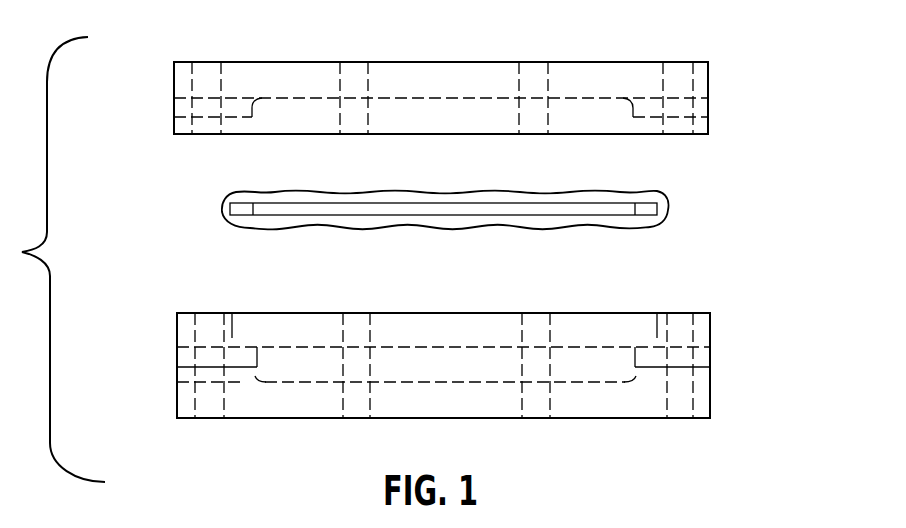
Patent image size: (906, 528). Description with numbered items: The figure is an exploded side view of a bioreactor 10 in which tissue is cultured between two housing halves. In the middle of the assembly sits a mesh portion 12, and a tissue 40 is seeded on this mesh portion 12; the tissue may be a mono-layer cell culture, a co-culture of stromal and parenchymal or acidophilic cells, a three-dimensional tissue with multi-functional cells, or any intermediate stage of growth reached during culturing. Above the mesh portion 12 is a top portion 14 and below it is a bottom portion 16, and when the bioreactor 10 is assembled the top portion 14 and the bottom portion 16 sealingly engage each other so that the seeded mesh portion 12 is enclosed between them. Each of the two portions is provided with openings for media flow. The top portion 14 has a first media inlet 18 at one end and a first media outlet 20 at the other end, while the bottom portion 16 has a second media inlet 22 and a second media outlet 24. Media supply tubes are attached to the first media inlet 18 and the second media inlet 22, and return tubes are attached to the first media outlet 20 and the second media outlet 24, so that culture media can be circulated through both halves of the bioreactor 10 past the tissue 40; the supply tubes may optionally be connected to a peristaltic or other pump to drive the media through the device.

The bioreactor 10 is at (810, 192).
The mesh portion 12 is at (232, 208).
The top portion 14 is at (174, 77).
The bottom portion 16 is at (177, 404).
The first media inlet 18 is at (175, 113).
The first media outlet 20 is at (710, 102).
The second media inlet 22 is at (177, 372).
The second media outlet 24 is at (710, 372).
The tissue 40 is at (632, 198).